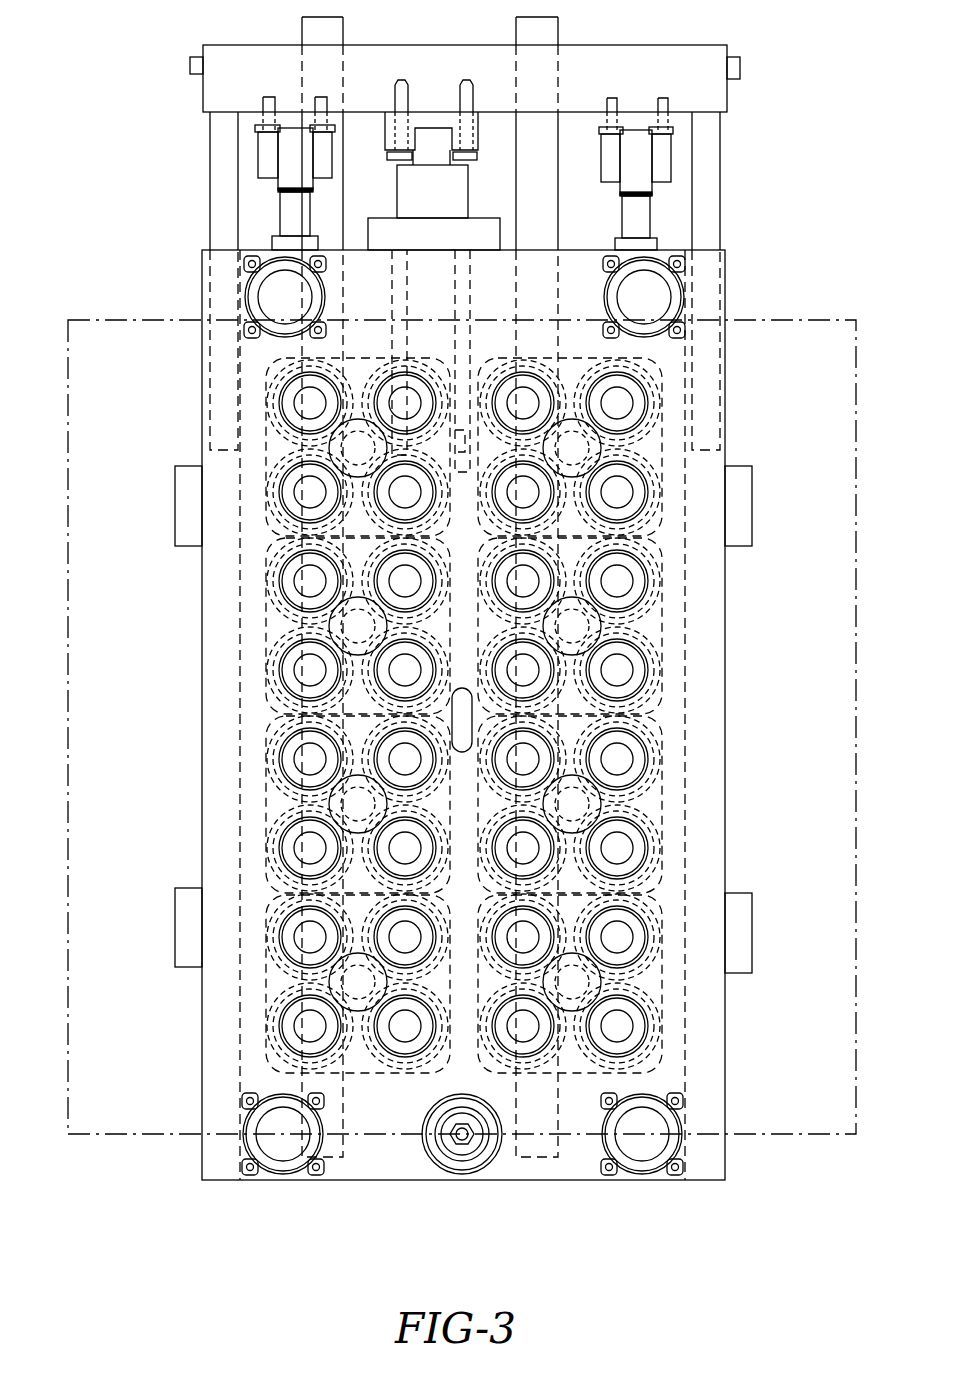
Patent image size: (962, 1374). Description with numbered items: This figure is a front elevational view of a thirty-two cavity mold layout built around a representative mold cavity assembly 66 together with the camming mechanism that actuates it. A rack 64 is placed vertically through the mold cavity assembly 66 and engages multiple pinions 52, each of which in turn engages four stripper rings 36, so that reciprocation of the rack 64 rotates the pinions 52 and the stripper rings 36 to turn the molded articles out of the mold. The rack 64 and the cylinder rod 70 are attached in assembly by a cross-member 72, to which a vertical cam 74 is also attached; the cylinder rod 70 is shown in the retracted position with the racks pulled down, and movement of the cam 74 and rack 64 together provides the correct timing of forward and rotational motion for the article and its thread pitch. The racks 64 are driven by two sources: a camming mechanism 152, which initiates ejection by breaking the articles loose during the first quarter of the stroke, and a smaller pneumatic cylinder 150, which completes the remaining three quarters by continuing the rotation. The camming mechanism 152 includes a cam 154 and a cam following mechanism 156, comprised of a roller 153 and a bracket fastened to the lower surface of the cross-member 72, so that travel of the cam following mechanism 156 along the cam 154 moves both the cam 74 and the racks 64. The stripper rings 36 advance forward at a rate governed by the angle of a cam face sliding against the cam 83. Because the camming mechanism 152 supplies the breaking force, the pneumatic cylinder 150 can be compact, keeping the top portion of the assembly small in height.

The stripper ring 36 is at (385, 926).
The pinion 52 is at (300, 443).
The rack 64 is at (548, 35).
The mold cavity assembly 66 is at (187, 767).
The cylinder rod 70 is at (423, 158).
The cross-member 72 is at (697, 62).
The cam 74 is at (713, 143).
The cam 83 is at (740, 931).
The pneumatic cylinder 150 is at (463, 193).
The camming mechanism 152 is at (720, 182).
The roller 153 is at (180, 101).
The cam 154 is at (645, 217).
The cam following mechanism 156 is at (645, 157).